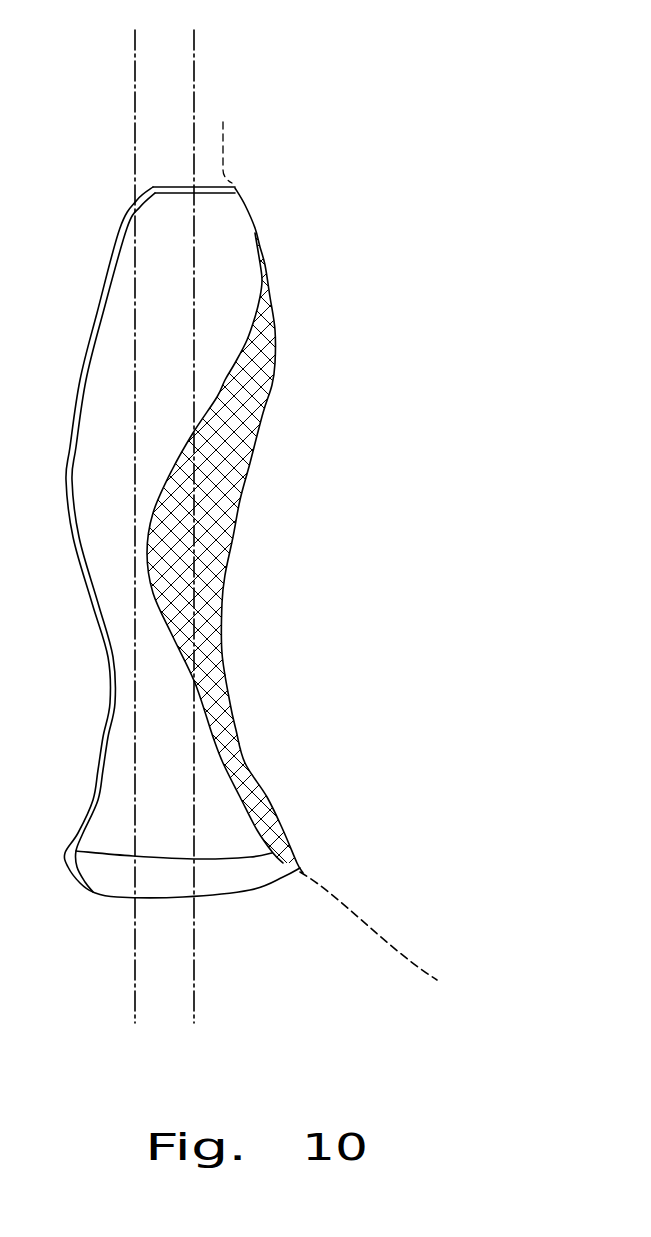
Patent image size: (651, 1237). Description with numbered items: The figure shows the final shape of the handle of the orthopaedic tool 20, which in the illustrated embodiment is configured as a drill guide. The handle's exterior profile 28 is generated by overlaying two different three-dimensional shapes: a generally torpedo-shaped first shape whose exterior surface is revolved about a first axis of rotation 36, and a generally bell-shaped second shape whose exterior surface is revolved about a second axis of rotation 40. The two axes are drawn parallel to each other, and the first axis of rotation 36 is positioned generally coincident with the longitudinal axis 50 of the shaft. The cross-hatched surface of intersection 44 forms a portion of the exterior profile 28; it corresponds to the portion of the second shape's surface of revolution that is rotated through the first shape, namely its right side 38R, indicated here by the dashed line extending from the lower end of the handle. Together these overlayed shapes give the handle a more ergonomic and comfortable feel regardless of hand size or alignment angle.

The orthopaedic tool 20 is at (298, 217).
The exterior profile 28 is at (229, 825).
The first axis of rotation 36 is at (261, 519).
The longitudinal axis 50 is at (194, 58).
The second axis of rotation 40 is at (135, 60).
The surface of intersection 44 is at (232, 530).
The right side of exterior surface of revolution 38R is at (397, 948).